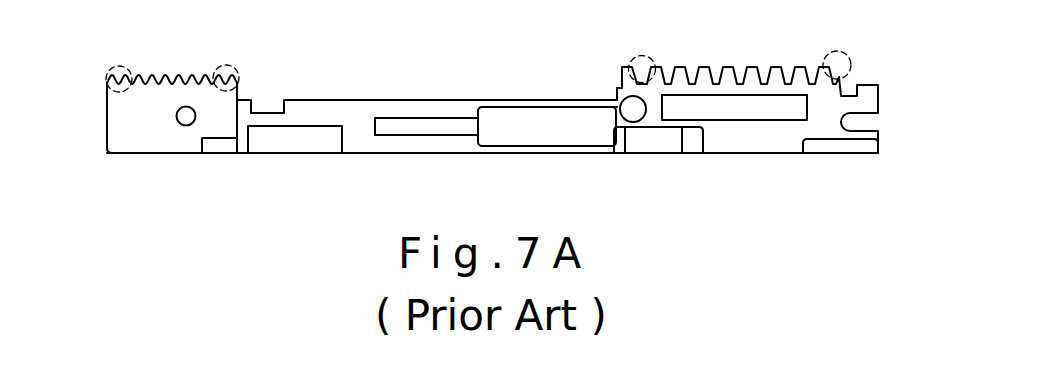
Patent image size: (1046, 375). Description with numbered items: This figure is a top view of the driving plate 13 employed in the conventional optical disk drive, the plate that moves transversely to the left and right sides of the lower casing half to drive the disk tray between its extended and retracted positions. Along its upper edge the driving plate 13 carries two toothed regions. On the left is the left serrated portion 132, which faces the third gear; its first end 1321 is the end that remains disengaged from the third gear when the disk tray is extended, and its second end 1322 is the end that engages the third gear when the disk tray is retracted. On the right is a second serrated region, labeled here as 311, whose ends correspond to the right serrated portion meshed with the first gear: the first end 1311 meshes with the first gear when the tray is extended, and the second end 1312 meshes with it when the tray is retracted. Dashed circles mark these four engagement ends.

The driving plate 13 is at (425, 118).
The left serrated portion 132 is at (170, 93).
The first end of the left serrated portion 1321 is at (228, 66).
The second end of the left serrated portion 1322 is at (122, 66).
The rack 311 is at (729, 92).
The first end of the right serrated portion 1311 is at (838, 52).
The second end of the right serrated portion 1312 is at (645, 58).